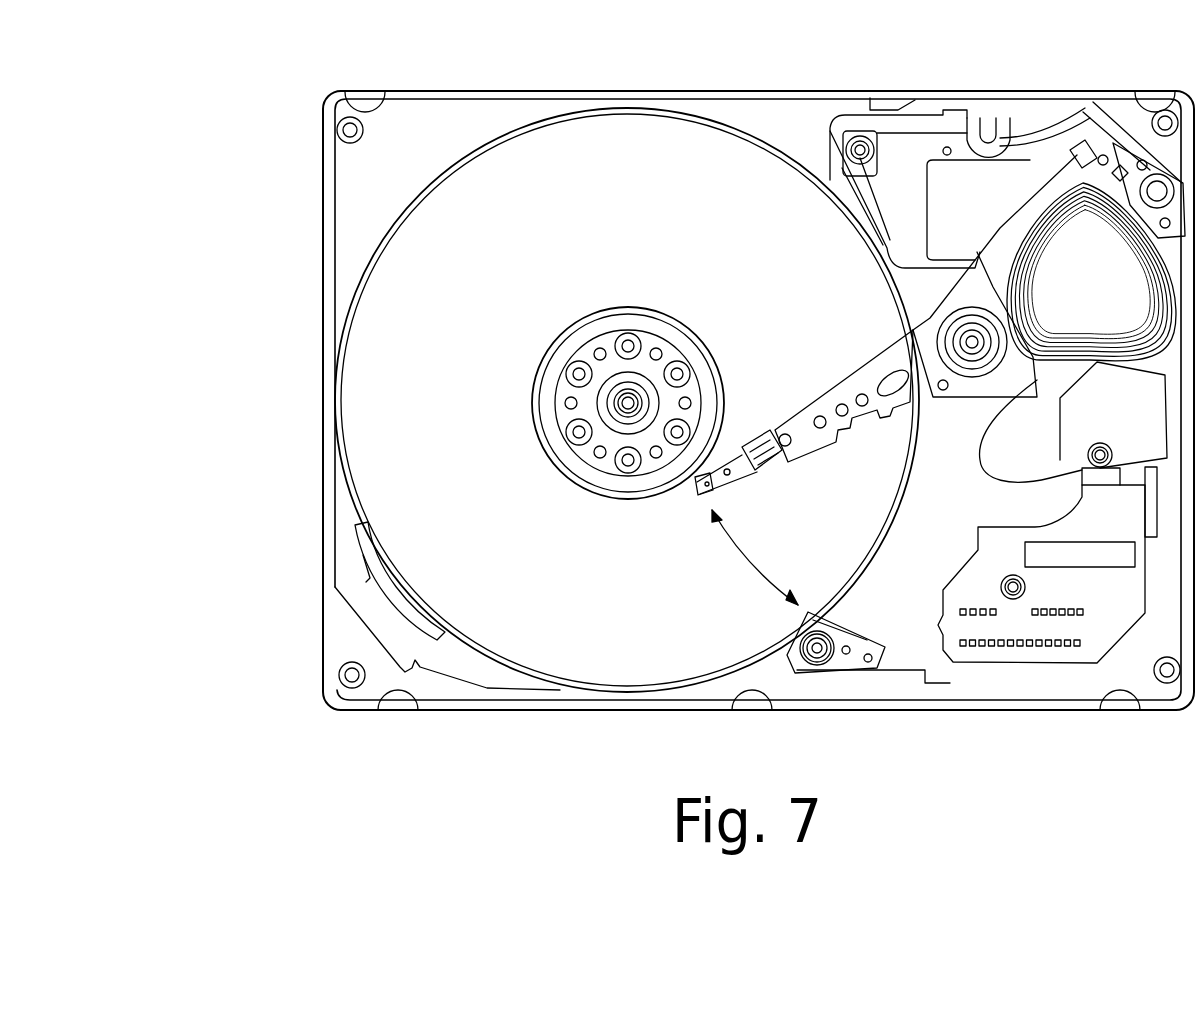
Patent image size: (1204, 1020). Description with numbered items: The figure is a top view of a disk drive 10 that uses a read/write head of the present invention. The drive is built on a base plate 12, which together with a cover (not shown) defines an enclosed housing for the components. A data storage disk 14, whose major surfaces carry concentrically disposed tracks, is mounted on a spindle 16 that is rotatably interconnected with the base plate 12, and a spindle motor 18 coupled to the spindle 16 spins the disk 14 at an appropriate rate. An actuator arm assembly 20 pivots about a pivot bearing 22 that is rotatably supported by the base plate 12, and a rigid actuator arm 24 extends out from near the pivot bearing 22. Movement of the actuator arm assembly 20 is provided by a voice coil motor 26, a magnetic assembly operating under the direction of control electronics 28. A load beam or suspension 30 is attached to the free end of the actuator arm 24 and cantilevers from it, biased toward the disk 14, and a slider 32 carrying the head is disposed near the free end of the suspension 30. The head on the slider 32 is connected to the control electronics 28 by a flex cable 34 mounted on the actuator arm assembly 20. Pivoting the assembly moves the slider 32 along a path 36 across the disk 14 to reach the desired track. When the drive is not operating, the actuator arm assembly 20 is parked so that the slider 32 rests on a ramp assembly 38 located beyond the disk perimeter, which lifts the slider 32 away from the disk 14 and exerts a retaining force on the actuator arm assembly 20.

The disk drive 10 is at (248, 180).
The base plate 12 is at (513, 90).
The data storage disk 14 is at (639, 137).
The spindle 16 is at (654, 306).
The spindle motor 18 is at (618, 396).
The actuator arm assembly 20 is at (853, 360).
The pivot bearing 22 is at (968, 356).
The actuator arm 24 is at (830, 442).
The voice coil motor 26 is at (1091, 272).
The control electronics 28 is at (1020, 652).
The suspension 30 is at (736, 446).
The slider 32 is at (697, 496).
The flex cable 34 is at (984, 478).
The path 36 is at (748, 562).
The ramp assembly 38 is at (845, 674).